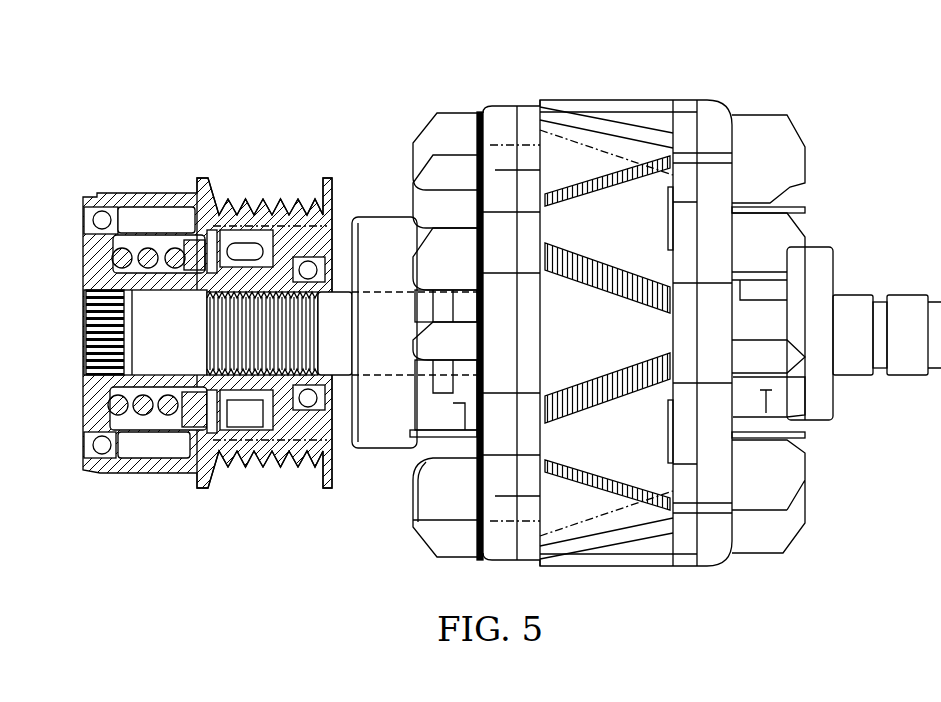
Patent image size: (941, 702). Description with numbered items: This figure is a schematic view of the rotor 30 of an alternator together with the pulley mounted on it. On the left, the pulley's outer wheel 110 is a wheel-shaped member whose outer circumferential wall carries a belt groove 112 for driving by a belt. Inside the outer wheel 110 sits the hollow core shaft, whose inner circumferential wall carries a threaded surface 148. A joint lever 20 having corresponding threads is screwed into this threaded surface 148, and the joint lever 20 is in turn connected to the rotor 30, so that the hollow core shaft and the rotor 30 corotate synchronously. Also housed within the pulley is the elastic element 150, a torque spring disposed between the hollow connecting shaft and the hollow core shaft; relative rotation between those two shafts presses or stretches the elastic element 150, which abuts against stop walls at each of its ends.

The outer wheel 110 is at (246, 320).
The belt groove 112 is at (262, 198).
The threaded surface 148 is at (86, 340).
The elastic element 150 is at (138, 410).
The joint lever 20 is at (264, 300).
The rotor 30 is at (600, 117).